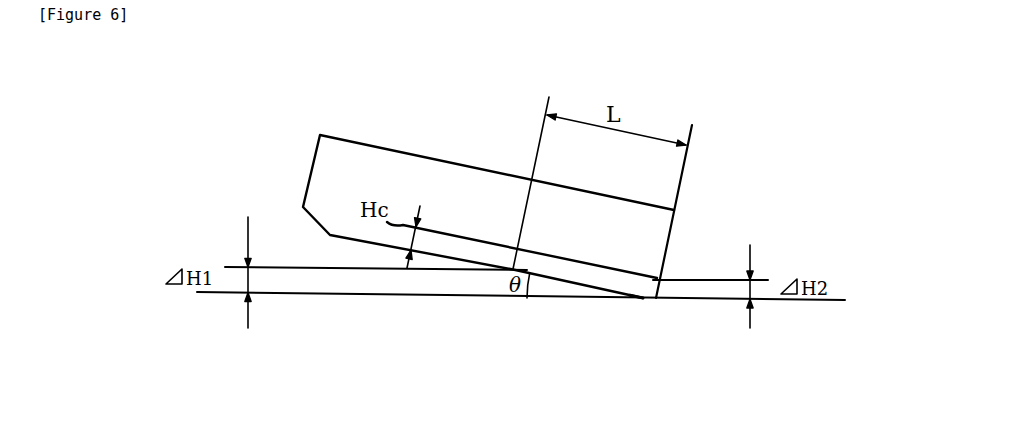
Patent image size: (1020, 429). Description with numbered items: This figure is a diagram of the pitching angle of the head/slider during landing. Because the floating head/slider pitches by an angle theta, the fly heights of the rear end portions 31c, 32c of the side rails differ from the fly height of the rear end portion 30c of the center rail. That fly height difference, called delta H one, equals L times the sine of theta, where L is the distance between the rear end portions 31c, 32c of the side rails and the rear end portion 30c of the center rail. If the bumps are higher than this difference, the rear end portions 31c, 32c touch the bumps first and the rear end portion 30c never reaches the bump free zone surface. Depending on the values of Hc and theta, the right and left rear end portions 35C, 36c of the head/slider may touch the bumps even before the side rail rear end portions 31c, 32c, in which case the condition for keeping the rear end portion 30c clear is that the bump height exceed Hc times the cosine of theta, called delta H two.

The rear end portion of side rail 31c is at (488, 198).
The rear end portion of side rail 32c is at (513, 268).
The rear end portion of head/slider 35C is at (723, 211).
The rear end portion of head/slider 36c is at (657, 280).
The rear end portion of center rail 30c is at (640, 299).